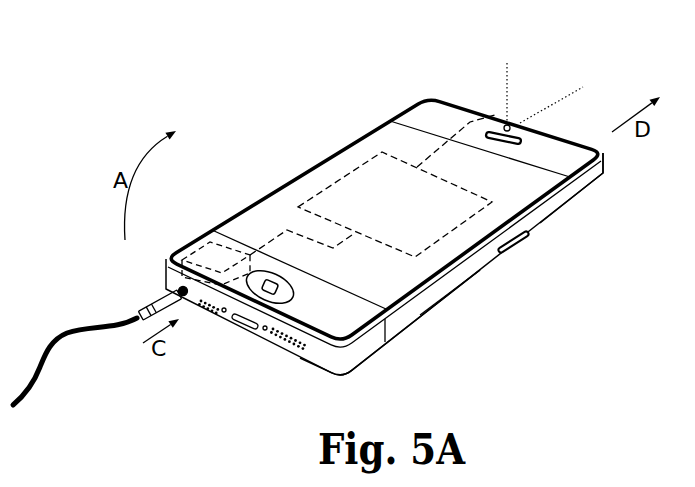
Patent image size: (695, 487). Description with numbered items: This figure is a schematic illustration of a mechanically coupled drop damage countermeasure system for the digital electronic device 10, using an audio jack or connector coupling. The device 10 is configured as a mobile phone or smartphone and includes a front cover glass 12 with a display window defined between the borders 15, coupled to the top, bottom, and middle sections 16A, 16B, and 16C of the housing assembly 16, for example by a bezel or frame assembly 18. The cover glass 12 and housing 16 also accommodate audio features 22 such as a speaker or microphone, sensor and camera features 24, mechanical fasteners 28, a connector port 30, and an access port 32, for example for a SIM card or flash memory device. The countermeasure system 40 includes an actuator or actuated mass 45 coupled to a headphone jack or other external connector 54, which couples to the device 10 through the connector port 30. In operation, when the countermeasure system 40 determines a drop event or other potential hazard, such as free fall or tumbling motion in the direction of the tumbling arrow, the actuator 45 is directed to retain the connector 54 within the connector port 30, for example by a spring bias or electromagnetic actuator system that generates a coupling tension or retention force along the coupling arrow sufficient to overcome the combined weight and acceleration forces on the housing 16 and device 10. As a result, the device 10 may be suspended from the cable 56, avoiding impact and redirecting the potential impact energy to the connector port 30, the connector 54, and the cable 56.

The digital electronic device 10 is at (409, 227).
The front cover glass 12 is at (418, 274).
The borders 15 is at (448, 115).
The housing assembly 16 is at (418, 274).
The top housing section 16A is at (357, 355).
The bottom housing section 16B is at (590, 182).
The middle housing section 16C is at (405, 320).
The bezel or frame assembly 18 is at (440, 277).
The audio features 22 is at (527, 137).
The sensor and camera features 24 is at (510, 126).
The mechanical fasteners 28 is at (263, 332).
The connector port 30 is at (187, 297).
The access port 32 is at (520, 244).
The countermeasure system 40 is at (336, 182).
The actuator or actuated mass 45 is at (198, 237).
The headphone jack or external connector 54 is at (147, 310).
The cable 56 is at (77, 330).